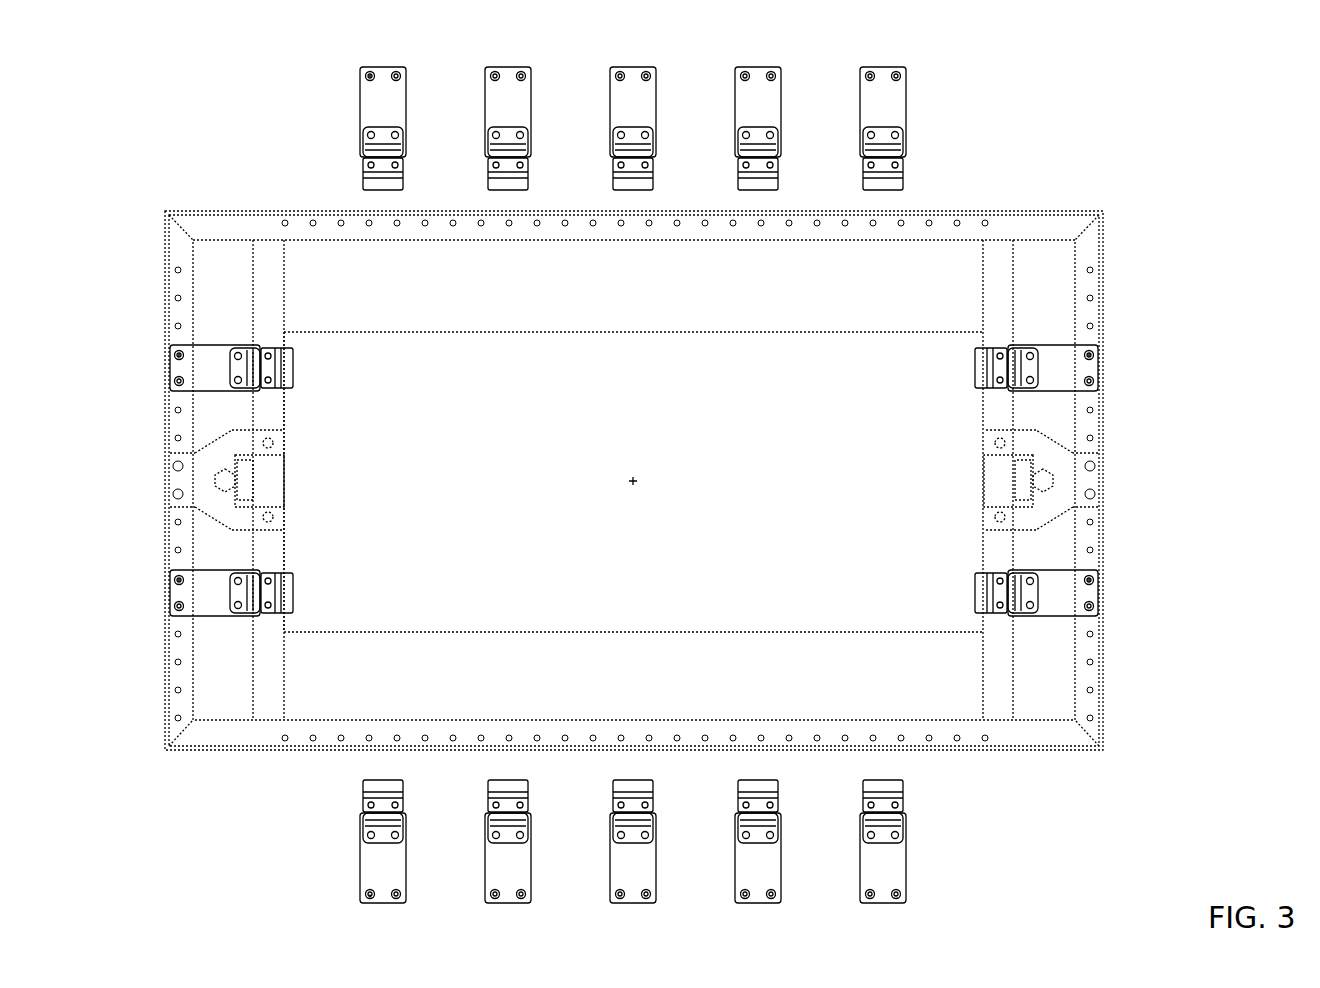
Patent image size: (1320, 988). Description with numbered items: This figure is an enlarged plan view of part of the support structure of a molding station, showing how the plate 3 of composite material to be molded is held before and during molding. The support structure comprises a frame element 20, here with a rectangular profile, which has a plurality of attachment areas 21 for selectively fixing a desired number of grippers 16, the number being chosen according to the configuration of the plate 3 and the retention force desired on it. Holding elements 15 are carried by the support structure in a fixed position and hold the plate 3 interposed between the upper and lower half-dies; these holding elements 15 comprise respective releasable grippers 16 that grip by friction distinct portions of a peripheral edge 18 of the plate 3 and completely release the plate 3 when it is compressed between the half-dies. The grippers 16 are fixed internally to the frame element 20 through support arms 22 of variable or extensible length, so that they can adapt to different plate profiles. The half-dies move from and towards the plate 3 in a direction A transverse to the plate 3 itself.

The plate 3 is at (475, 368).
The holding elements 15 is at (412, 96).
The releasable grippers 16 is at (357, 147).
The peripheral edge 18 is at (767, 352).
The frame element 20 is at (1046, 208).
The attachment areas 21 is at (352, 207).
The support arms 22 is at (387, 67).
The direction A is at (630, 481).